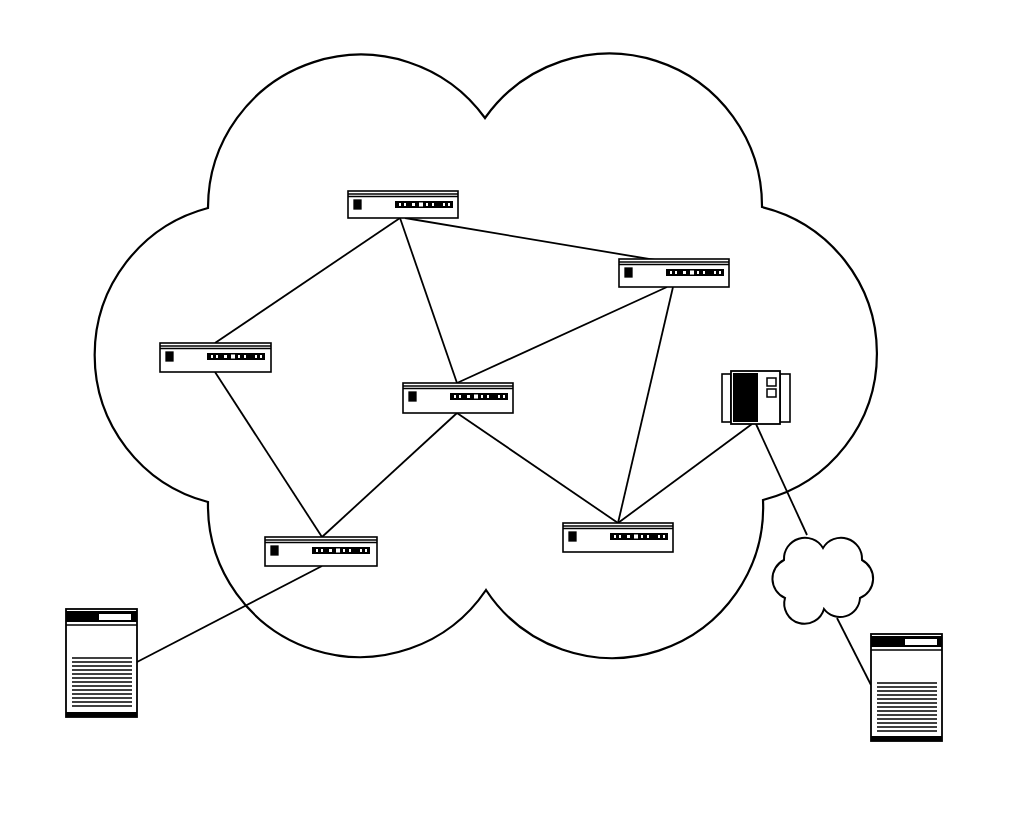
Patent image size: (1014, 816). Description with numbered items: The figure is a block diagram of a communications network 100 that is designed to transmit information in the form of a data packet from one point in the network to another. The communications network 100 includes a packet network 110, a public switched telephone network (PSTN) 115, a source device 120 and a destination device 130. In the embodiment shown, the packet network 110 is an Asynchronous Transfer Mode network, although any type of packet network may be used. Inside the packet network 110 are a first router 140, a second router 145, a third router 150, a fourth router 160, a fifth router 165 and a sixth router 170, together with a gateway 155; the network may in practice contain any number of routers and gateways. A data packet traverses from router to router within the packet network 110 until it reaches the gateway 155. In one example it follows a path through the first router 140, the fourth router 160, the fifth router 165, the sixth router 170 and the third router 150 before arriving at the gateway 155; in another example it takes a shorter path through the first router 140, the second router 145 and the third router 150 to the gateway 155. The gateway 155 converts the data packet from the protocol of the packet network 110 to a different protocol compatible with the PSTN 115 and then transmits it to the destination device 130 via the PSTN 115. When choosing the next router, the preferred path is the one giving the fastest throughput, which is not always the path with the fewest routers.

The communications network 100 is at (840, 53).
The packet network 110 is at (615, 53).
The public switched telephone network 115 is at (847, 531).
The source device 120 is at (132, 609).
The destination device 130 is at (937, 635).
The first router 140 is at (362, 538).
The second router 145 is at (500, 384).
The third router 150 is at (660, 524).
The gateway 155 is at (780, 373).
The fourth router 160 is at (253, 344).
The fifth router 165 is at (444, 192).
The sixth router 170 is at (718, 260).